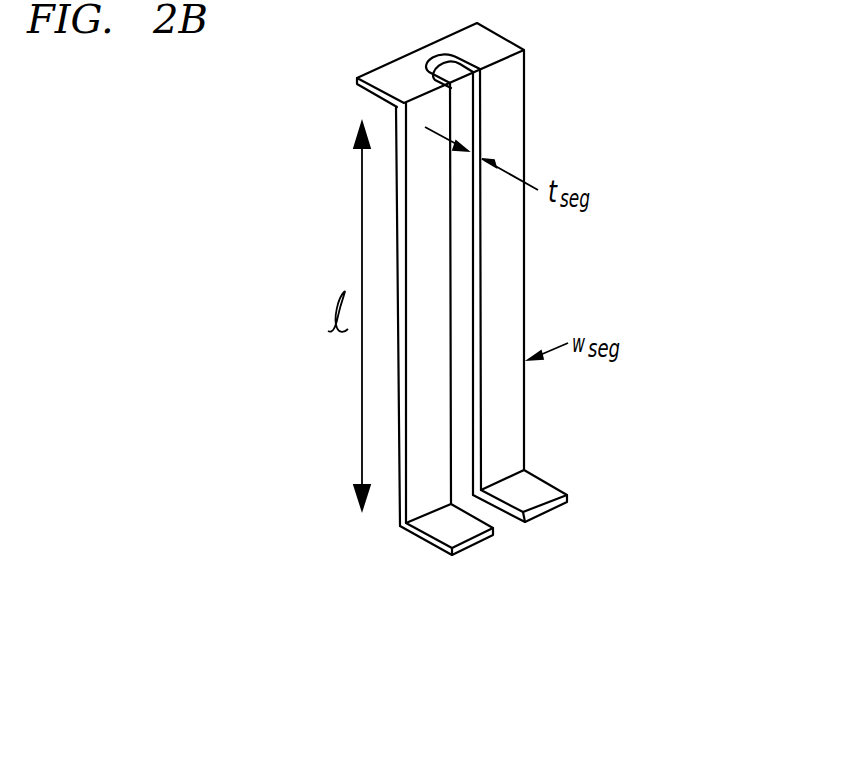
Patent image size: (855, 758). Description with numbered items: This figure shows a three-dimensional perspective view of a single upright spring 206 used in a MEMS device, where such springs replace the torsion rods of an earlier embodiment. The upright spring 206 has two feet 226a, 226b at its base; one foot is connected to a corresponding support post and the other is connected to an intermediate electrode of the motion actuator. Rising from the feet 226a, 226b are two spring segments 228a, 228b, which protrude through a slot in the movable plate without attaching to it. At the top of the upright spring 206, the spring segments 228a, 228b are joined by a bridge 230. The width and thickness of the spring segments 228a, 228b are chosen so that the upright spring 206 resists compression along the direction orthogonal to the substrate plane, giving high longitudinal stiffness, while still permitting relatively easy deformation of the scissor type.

The upright spring 206 is at (431, 323).
The bridge 230 is at (488, 40).
The spring segment 228a is at (418, 229).
The spring segment 228b is at (509, 273).
The foot 226a is at (462, 530).
The foot 226b is at (566, 499).